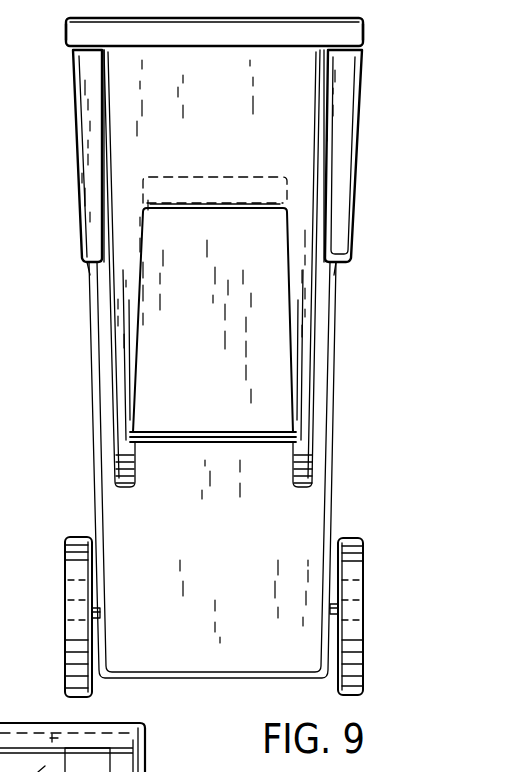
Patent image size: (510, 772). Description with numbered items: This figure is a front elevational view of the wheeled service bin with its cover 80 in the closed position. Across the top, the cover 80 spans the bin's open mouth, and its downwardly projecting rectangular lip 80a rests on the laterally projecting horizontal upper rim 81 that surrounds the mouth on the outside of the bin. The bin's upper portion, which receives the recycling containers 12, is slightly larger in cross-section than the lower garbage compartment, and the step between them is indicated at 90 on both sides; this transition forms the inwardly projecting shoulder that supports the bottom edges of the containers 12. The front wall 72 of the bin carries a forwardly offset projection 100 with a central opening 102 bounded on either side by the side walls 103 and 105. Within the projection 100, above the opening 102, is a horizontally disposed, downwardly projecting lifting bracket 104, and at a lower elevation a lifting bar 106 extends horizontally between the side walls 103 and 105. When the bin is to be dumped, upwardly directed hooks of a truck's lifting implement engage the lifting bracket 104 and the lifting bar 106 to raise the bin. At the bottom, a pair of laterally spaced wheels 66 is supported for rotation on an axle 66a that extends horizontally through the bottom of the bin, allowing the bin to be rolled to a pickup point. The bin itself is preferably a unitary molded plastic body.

The recycling container 12 is at (1, 735).
The wheel 66 is at (80, 575).
The axle 66a is at (92, 615).
The front wall 72 is at (212, 470).
The cover 80 is at (257, 47).
The lip 80a is at (66, 36).
The upper rim 81 is at (70, 50).
The step between upper and lower portions 90 is at (90, 265).
The forwardly offset projection 100 is at (245, 123).
The central opening 102 is at (222, 325).
The side wall 103 is at (125, 352).
The lifting bracket 104 is at (232, 213).
The side wall 105 is at (303, 380).
The lifting bar 106 is at (227, 435).